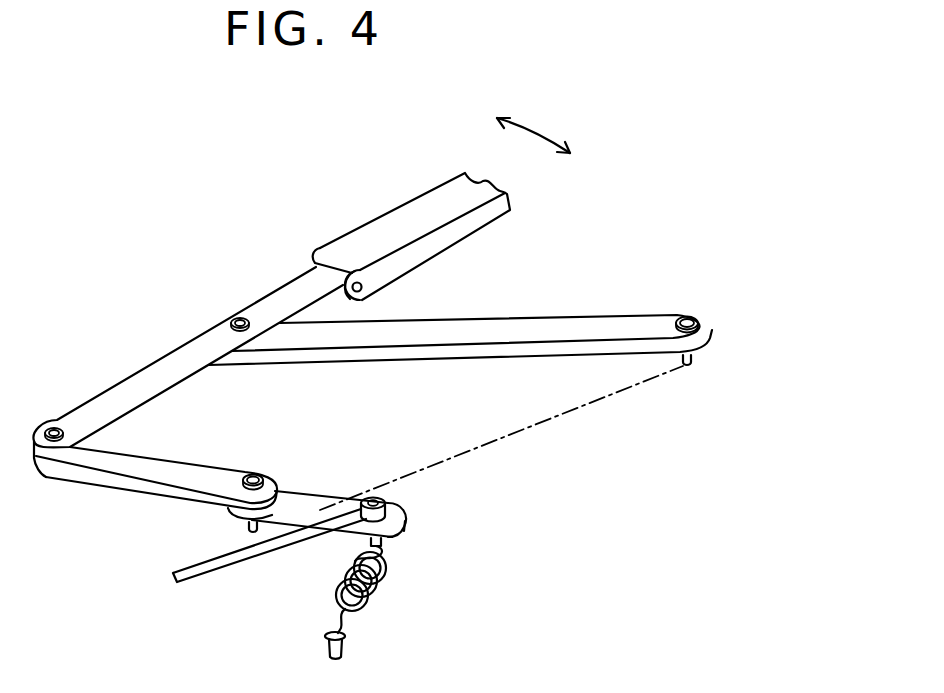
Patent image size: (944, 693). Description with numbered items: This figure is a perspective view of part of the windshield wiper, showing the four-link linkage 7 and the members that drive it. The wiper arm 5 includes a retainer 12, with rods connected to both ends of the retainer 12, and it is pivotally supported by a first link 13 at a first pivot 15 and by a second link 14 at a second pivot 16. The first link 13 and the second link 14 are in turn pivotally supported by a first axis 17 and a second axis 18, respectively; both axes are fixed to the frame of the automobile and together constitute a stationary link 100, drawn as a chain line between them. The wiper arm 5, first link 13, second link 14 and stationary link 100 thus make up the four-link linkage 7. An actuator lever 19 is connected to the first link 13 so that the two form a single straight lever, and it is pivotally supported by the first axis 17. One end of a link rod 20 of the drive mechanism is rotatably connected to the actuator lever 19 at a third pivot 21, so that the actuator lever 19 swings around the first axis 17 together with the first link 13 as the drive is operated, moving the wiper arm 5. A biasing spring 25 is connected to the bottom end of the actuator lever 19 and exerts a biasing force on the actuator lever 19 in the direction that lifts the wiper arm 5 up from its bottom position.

The wiper arm 5 is at (363, 210).
The four-link linkage 7 is at (368, 380).
The retainer 12 is at (290, 292).
The first link 13 is at (185, 468).
The second link 14 is at (545, 318).
The first pivot 15 is at (52, 427).
The second pivot 16 is at (235, 318).
The first axis 17 is at (253, 473).
The second axis 18 is at (686, 316).
The actuator lever 19 is at (307, 502).
The link rod 20 is at (240, 558).
The third pivot 21 is at (388, 492).
The biasing spring 25 is at (387, 587).
The stationary link 100 is at (570, 408).